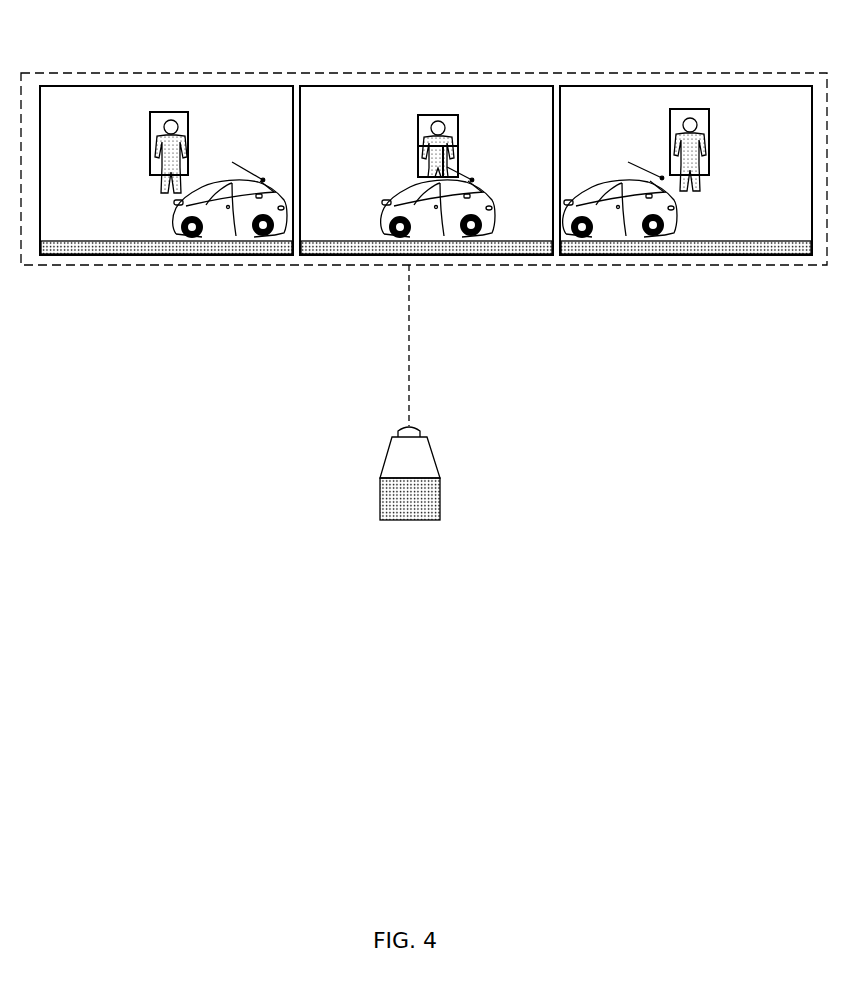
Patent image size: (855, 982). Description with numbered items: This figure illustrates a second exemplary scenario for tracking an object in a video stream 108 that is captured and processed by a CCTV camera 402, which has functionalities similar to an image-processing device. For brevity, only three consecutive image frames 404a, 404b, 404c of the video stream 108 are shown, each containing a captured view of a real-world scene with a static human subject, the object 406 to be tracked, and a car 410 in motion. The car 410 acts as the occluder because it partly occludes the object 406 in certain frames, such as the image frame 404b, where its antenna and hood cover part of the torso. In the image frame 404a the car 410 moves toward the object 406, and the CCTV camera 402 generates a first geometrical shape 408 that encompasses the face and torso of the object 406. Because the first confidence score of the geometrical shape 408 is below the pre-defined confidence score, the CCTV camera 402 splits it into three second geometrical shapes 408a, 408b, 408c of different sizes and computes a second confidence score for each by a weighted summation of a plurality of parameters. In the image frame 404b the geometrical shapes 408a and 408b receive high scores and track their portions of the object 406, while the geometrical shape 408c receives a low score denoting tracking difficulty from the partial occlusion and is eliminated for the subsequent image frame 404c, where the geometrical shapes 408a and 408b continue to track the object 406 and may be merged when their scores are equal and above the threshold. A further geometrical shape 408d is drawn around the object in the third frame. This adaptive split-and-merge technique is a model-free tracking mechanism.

The video stream 108 is at (793, 73).
The CCTV camera 402 is at (440, 490).
The image frame 404a is at (70, 85).
The image frame 404b is at (332, 85).
The image frame 404c is at (590, 85).
The object 406 is at (173, 122).
The geometrical shape 408 is at (153, 112).
The geometrical shape 408a is at (425, 115).
The geometrical shape 408b is at (383, 255).
The geometrical shape 408c is at (478, 215).
The bounding box 408d is at (677, 110).
The car 410 is at (237, 213).